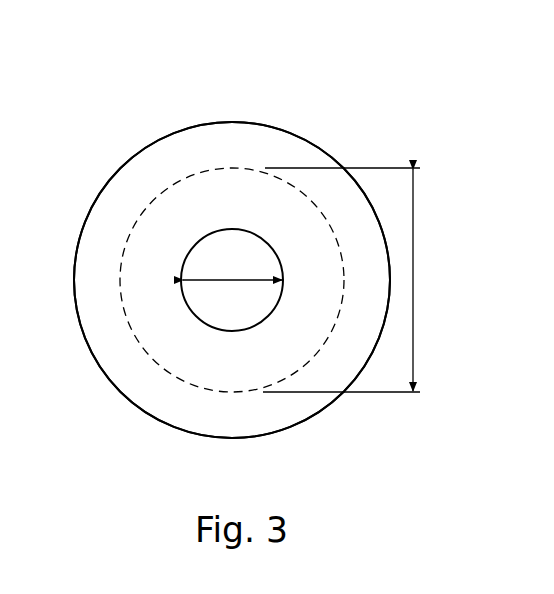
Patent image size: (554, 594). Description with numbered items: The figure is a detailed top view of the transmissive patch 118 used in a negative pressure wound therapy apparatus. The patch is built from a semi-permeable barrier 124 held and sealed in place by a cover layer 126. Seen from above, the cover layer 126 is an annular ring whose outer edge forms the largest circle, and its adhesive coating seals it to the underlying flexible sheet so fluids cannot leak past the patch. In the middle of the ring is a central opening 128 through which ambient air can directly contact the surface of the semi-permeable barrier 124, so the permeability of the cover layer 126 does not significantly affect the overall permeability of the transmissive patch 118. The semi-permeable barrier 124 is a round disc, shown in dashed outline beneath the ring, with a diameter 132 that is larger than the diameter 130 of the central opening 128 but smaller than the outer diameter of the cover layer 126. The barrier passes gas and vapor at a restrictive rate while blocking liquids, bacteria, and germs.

The transmissive patch 118 is at (203, 102).
The semi-permeable barrier 124 is at (210, 168).
The cover layer 126 is at (262, 427).
The central opening 128 is at (222, 231).
The diameter 130 is at (232, 283).
The diameter 132 is at (413, 274).